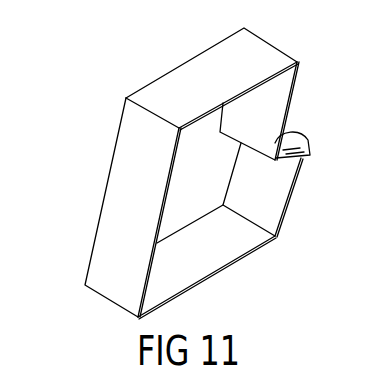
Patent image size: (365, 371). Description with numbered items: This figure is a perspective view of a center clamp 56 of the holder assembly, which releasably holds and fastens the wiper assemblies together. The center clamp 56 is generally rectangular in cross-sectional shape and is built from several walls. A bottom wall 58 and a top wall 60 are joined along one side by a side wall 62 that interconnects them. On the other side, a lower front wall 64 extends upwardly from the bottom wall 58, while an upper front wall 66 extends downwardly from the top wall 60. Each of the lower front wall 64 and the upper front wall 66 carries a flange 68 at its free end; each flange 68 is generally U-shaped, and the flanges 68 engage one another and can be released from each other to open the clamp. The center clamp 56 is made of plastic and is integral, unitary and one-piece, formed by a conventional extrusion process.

The center clamp 56 is at (83, 167).
The bottom wall 58 is at (192, 250).
The top wall 60 is at (208, 77).
The side wall 62 is at (132, 208).
The lower front wall 64 is at (264, 182).
The upper front wall 66 is at (256, 106).
The flange 68 is at (310, 148).